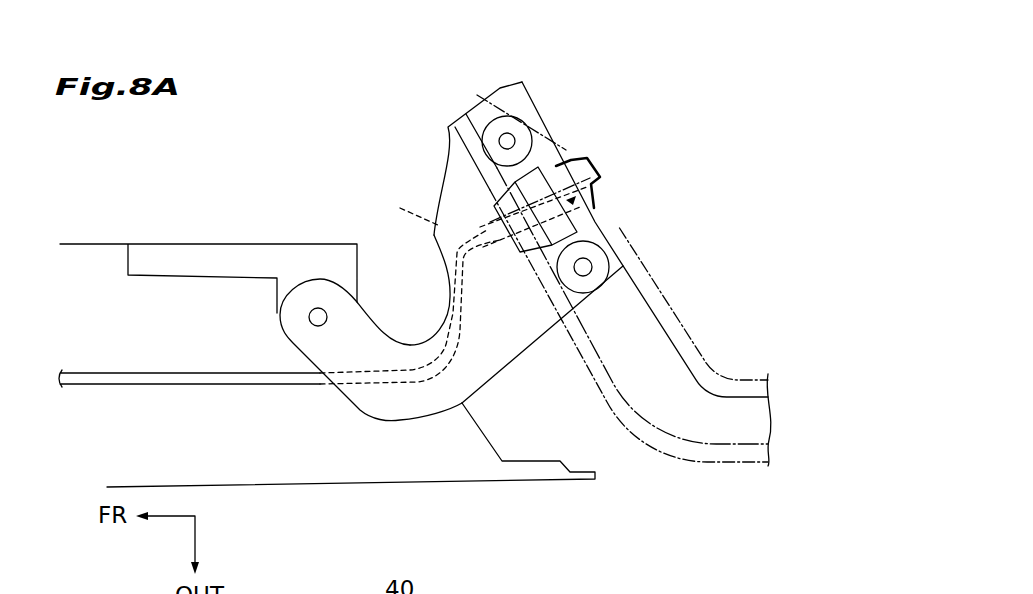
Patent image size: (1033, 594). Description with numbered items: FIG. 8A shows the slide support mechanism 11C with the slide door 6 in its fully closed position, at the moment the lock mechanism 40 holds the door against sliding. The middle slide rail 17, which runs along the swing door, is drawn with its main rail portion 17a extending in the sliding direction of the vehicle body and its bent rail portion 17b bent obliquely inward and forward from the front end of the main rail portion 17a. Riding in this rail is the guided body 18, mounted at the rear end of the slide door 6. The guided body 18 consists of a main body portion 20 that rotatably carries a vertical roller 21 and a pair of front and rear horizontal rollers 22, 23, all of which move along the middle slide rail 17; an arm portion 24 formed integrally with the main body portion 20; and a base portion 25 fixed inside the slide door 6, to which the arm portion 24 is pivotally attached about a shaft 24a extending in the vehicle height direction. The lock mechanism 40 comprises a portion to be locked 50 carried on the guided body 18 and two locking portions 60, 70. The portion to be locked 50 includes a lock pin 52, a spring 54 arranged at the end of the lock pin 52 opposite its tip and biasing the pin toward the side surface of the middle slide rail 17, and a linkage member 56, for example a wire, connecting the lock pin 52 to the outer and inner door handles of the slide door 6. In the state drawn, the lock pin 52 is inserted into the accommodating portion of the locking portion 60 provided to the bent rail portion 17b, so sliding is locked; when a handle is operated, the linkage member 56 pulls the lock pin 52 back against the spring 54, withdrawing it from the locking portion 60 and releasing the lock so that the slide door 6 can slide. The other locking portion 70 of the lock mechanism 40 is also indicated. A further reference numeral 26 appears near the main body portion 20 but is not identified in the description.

The slide door 6 is at (280, 467).
The slide support mechanism 11C is at (657, 133).
The middle slide rail 17 is at (627, 274).
The main rail portion 17a is at (752, 367).
The bent rail portion 17b is at (662, 323).
The guided body 18 is at (600, 188).
The main body portion 20 is at (451, 267).
The vertical roller 21 is at (540, 176).
The front horizontal roller 22 is at (518, 132).
The rear horizontal roller 23 is at (598, 265).
The arm portion 24 is at (407, 397).
The shaft 24a is at (320, 315).
The base portion 25 is at (208, 258).
The arm upper edge 26 is at (455, 143).
The lock mechanism 40 is at (628, 202).
The portion to be locked 50 is at (485, 273).
The lock pin 52 is at (592, 167).
The spring 54 is at (409, 205).
The linkage member 56 is at (177, 378).
The locking portion 60 is at (598, 160).
The locking portion 70 is at (429, 581).